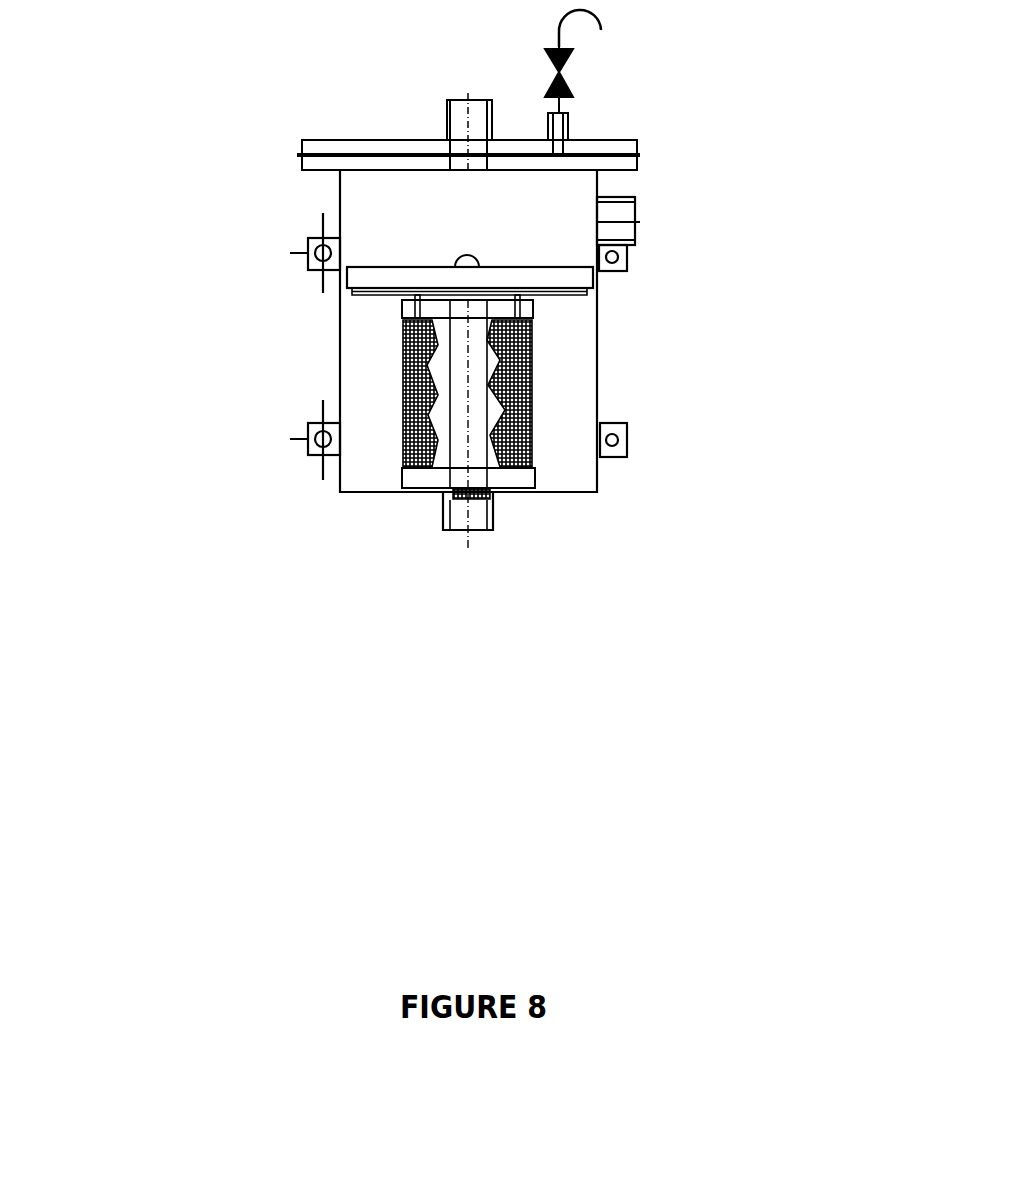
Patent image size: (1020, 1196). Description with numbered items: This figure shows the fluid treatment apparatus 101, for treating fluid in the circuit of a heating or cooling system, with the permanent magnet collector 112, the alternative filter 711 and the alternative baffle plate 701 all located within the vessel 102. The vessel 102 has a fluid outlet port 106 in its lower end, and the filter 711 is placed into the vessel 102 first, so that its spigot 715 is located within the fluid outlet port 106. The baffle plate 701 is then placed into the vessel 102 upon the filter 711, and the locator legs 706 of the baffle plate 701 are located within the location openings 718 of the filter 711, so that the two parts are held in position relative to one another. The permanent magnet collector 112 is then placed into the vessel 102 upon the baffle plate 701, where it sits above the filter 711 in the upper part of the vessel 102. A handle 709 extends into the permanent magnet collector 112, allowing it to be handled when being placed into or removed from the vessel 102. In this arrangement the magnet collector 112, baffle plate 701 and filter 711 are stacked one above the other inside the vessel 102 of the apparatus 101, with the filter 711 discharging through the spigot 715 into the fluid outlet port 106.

The fluid treatment apparatus 101 is at (235, 693).
The vessel 102 is at (597, 397).
The fluid outlet port 106 is at (447, 523).
The permanent magnet collector 112 is at (573, 273).
The baffle plate 701 is at (563, 295).
The locator legs 706 is at (407, 307).
The handle 709 is at (463, 262).
The filter 711 is at (535, 455).
The spigot 715 is at (493, 497).
The location openings 718 is at (410, 312).